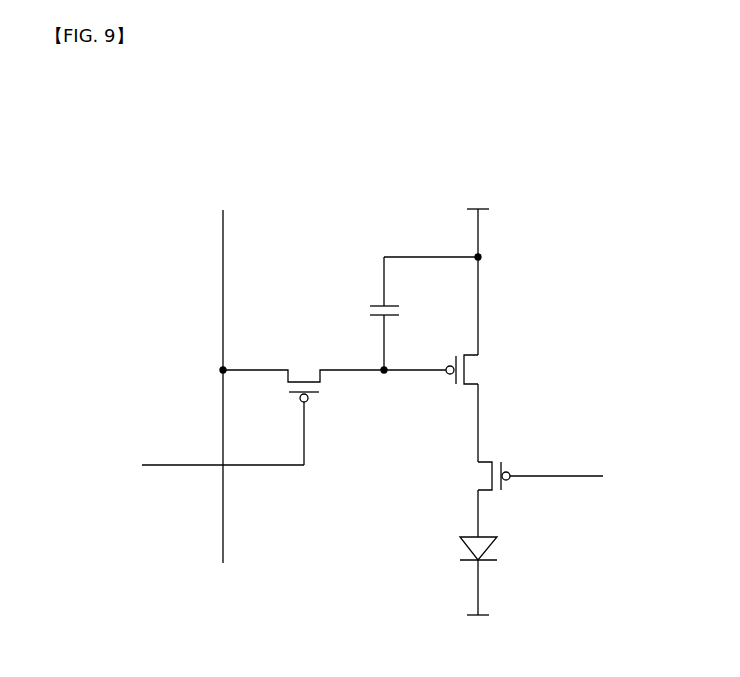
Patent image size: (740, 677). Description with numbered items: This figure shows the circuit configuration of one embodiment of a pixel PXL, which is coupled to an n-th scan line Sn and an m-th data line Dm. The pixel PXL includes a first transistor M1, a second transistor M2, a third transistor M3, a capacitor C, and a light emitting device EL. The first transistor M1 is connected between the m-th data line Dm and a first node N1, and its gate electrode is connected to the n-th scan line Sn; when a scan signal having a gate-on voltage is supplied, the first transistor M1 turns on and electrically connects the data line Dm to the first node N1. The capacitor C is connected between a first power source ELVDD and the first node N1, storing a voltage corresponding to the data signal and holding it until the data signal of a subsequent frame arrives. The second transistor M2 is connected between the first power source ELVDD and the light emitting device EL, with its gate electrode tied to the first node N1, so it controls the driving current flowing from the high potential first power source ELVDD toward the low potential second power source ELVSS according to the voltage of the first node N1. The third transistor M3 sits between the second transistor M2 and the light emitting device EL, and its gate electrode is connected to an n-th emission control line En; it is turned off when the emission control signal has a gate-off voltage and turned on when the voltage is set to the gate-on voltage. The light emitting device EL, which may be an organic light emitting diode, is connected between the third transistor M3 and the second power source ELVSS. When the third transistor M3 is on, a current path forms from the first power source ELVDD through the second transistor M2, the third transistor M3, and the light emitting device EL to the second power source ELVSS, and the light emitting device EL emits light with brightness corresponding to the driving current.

The pixel PXL is at (552, 151).
The m-th data line Dm is at (223, 375).
The n-th scan line Sn is at (209, 439).
The first transistor M1 is at (302, 374).
The first node N1 is at (410, 383).
The capacitor C is at (417, 313).
The first power source ELVDD is at (480, 270).
The second transistor M2 is at (476, 408).
The third transistor M3 is at (485, 499).
The n-th emission control line En is at (569, 477).
The light emitting device EL is at (491, 576).
The second power source ELVSS is at (473, 628).